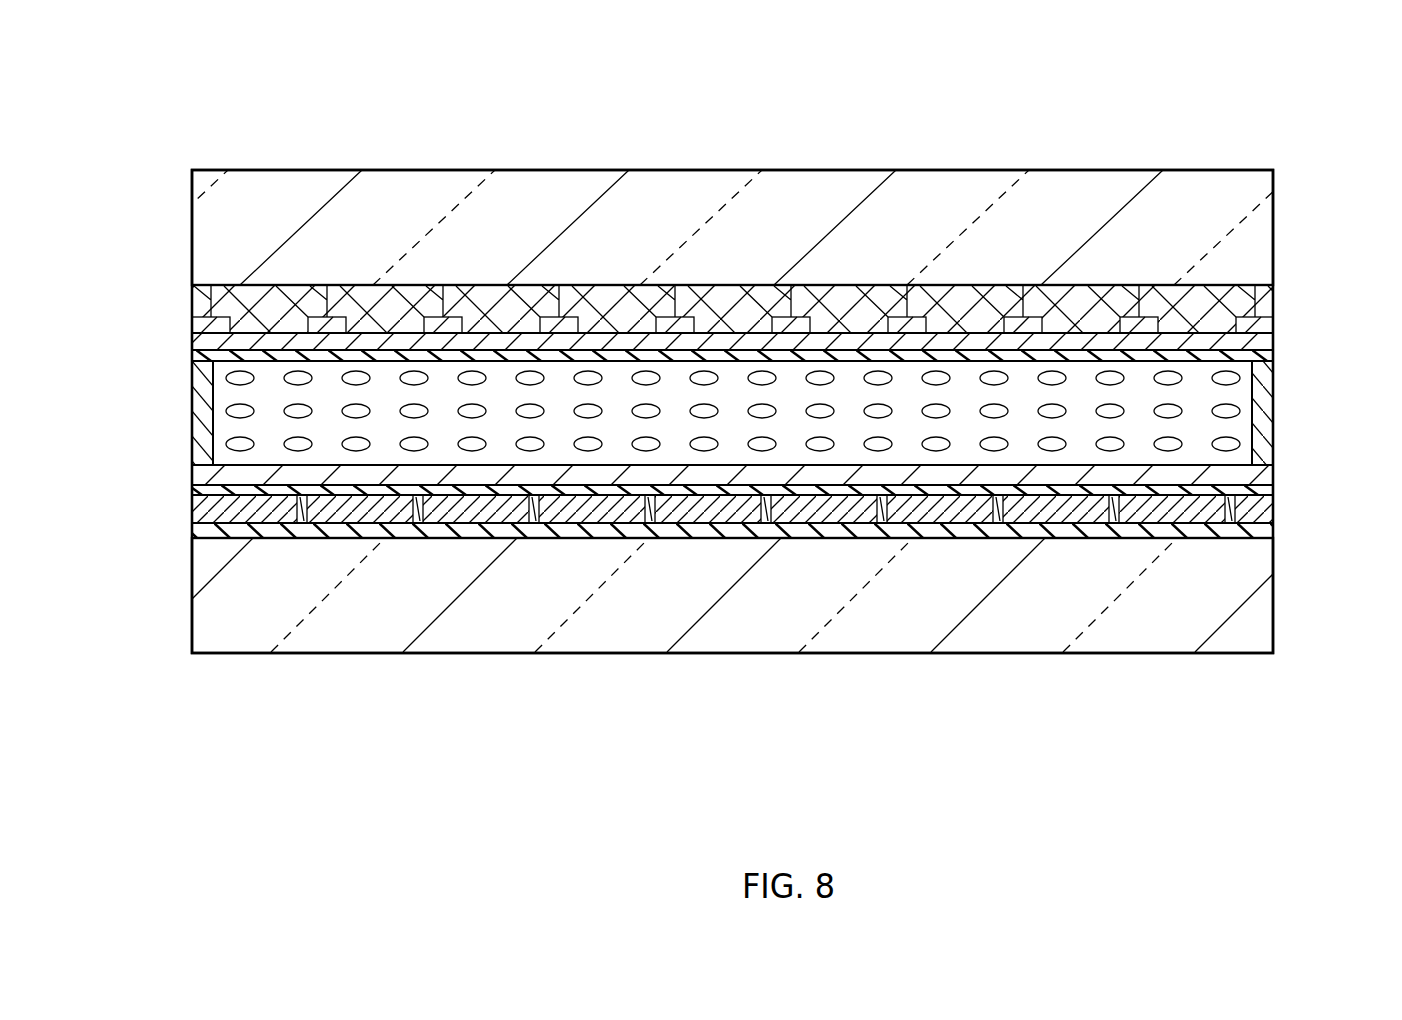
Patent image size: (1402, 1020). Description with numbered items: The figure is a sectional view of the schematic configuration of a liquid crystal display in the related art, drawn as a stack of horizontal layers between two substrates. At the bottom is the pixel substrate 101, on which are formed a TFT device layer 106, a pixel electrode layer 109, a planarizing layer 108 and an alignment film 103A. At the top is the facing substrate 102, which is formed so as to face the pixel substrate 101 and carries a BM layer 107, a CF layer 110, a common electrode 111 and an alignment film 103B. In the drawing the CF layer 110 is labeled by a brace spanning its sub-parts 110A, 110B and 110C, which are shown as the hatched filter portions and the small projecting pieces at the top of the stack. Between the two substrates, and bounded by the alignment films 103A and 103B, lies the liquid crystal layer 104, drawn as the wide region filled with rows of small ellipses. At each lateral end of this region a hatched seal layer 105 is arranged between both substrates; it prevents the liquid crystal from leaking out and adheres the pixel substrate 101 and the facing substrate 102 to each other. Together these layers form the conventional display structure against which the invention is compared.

The pixel substrate 101 is at (1263, 624).
The facing substrate 102 is at (1265, 229).
The alignment film 103A is at (1262, 481).
The alignment film 103B is at (1266, 367).
The liquid crystal layer 104 is at (1226, 444).
The seal layer 105 is at (1260, 424).
The TFT device layer 106 is at (1253, 540).
The BM layer 107 is at (1260, 333).
The planarizing layer 108 is at (1226, 531).
The pixel electrode layer 109 is at (1262, 516).
The CF layer 110 is at (532, 80).
The touch sensor insulating layer 110A is at (272, 317).
The touch sensor wiring 110B is at (387, 317).
The touch sensor electrode 110C is at (733, 325).
The common electrode 111 is at (1260, 344).